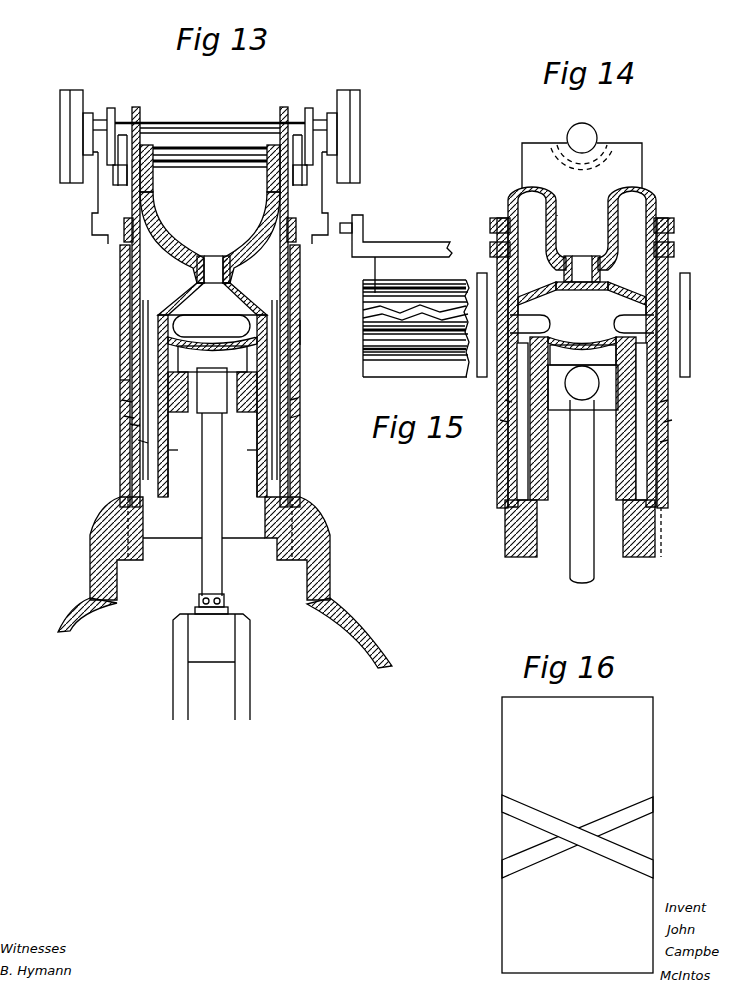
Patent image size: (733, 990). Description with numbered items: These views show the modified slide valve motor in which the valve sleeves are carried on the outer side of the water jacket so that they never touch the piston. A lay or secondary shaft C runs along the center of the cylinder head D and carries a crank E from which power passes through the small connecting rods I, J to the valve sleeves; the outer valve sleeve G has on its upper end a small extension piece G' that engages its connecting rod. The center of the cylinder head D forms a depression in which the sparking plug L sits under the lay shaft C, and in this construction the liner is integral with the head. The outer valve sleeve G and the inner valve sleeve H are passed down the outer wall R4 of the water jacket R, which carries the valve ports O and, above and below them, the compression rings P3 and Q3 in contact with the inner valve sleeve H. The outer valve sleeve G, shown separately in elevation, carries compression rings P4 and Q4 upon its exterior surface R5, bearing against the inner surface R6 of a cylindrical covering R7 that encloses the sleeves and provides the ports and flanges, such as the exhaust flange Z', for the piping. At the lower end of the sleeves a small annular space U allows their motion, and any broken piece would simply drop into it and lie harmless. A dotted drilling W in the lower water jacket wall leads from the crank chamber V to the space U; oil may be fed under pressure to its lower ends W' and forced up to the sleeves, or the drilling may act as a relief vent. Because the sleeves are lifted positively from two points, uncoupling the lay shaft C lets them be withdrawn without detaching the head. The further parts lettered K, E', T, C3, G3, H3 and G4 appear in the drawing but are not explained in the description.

In FIG. 13, the fly wheel plate K is at (62, 128).
In FIG. 13, the crank E is at (210, 136).
In FIG. 13, the rod E' is at (209, 152).
In FIG. 13, the valve connecting rod J is at (121, 187).
In FIG. 13, the valve connecting rod I is at (98, 191).
In FIG. 13, the lay or secondary shaft C is at (195, 122).
In FIG. 14, the lay or secondary shaft C is at (590, 141).
In FIG. 13, the head cover T is at (210, 116).
In FIG. 14, the head cover T is at (624, 153).
In FIG. 13, the inner valve sleeve H is at (272, 200).
In FIG. 14, the inner valve sleeve H is at (498, 220).
In FIG. 13, the extension piece G' is at (181, 238).
In FIG. 13, the water jacket R is at (152, 466).
In FIG. 14, the water jacket R is at (688, 486).
In FIG. 13, the outer valve sleeve G is at (209, 376).
In FIG. 15, the outer valve sleeve G is at (368, 272).
In FIG. 13, the cylinder head D is at (210, 237).
In FIG. 14, the cylinder head D is at (573, 210).
In FIG. 13, the sparking plug L is at (213, 269).
In FIG. 14, the sparking plug L is at (582, 269).
In FIG. 13, the compression ring P3 is at (182, 293).
In FIG. 14, the compression ring P3 is at (582, 291).
In FIG. 13, the compression ring P4 is at (126, 292).
In FIG. 14, the compression ring P4 is at (582, 299).
In FIG. 15, the compression ring P4 is at (368, 288).
In FIG. 13, the valve ports O is at (212, 333).
In FIG. 15, the valve ports O is at (366, 318).
In FIG. 13, the drilling W is at (211, 471).
In FIG. 14, the drilling W is at (604, 464).
In FIG. 13, the outer wall of water jacket R4 is at (130, 316).
In FIG. 14, the outer wall of water jacket R4 is at (660, 460).
In FIG. 13, the compression ring Q4 is at (142, 338).
In FIG. 14, the compression ring Q4 is at (556, 337).
In FIG. 15, the compression ring Q4 is at (372, 343).
In FIG. 13, the compression ring Q3 is at (300, 332).
In FIG. 13, the jacket wall G3 is at (95, 386).
In FIG. 14, the jacket wall G3 is at (668, 380).
In FIG. 13, the jacket wall H3 is at (122, 401).
In FIG. 14, the jacket wall H3 is at (670, 401).
In FIG. 13, the annular space U is at (124, 417).
In FIG. 14, the annular space U is at (672, 421).
In FIG. 13, the inner surface of cylindrical covering R6 is at (130, 425).
In FIG. 13, the jacket wall G4 is at (138, 442).
In FIG. 13, the cylindrical covering R7 is at (300, 417).
In FIG. 14, the cylindrical covering R7 is at (668, 441).
In FIG. 13, the lower ends of drillings W' is at (210, 608).
In FIG. 14, the lower ends of drillings W' is at (656, 545).
In FIG. 13, the crank chamber V is at (122, 630).
In FIG. 14, the seat C3 is at (570, 140).
In FIG. 14, the exterior surface of outer valve sleeve R5 is at (700, 281).
In FIG. 15, the exterior surface of outer valve sleeve R5 is at (434, 388).
In FIG. 14, the exhaust flange Z' is at (697, 317).